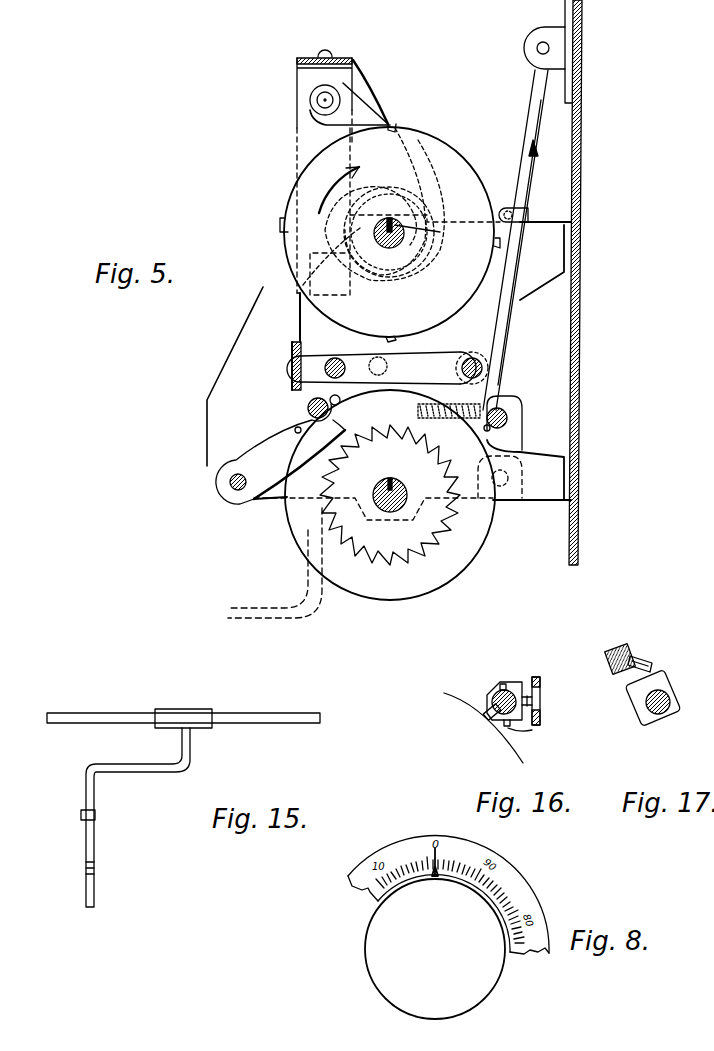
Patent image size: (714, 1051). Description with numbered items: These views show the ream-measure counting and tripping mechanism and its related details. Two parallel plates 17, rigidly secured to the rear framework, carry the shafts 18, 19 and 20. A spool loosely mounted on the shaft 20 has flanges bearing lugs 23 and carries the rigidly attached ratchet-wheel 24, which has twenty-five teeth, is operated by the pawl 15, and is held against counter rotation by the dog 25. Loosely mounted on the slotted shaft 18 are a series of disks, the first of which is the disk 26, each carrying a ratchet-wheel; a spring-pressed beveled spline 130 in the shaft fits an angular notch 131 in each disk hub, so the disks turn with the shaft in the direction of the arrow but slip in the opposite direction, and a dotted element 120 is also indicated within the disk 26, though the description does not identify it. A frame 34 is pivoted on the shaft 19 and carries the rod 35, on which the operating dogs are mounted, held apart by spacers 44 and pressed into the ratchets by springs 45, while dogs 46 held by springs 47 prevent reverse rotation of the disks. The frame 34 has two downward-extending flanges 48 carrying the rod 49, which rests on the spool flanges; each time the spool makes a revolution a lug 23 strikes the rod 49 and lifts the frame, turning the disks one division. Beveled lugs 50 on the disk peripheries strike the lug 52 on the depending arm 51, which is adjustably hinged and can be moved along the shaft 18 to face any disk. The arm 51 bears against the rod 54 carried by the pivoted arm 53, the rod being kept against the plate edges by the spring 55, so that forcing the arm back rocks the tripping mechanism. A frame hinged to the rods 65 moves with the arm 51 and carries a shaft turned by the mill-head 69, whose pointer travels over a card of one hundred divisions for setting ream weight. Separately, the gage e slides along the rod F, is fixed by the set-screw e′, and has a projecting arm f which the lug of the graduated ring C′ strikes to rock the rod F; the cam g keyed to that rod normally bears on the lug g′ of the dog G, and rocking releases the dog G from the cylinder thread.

In FIG. 5, the dog 15 is at (308, 590).
In FIG. 5, the parallel plates 17 is at (394, 282).
In FIG. 5, the shaft 18 is at (389, 248).
In FIG. 5, the shaft 19 is at (480, 362).
In FIG. 5, the shaft 20 is at (407, 490).
In FIG. 5, the lugs 23 is at (340, 400).
In FIG. 5, the ratchet-wheel 24 is at (374, 495).
In FIG. 5, the dog 25 is at (275, 455).
In FIG. 5, the disk 26 is at (392, 232).
In FIG. 5, the frame 34 is at (335, 358).
In FIG. 5, the rod 35 is at (290, 378).
In FIG. 5, the spacers 44 is at (420, 360).
In FIG. 5, the springs 45 is at (296, 300).
In FIG. 5, the dogs 46 is at (355, 107).
In FIG. 5, the springs 47 is at (372, 80).
In FIG. 5, the flanges 48 is at (308, 406).
In FIG. 5, the rod 49 is at (294, 430).
In FIG. 5, the beveled lugs 50 is at (396, 126).
In FIG. 5, the depending arm 51 is at (524, 190).
In FIG. 15, the depending arm 51 is at (110, 764).
In FIG. 5, the lug 52 is at (510, 208).
In FIG. 15, the lug 52 is at (95, 814).
In FIG. 5, the arm 53 is at (522, 420).
In FIG. 5, the rod 54 is at (500, 408).
In FIG. 5, the spring 55 is at (440, 418).
In FIG. 5, the rods 65 is at (549, 47).
In FIG. 15, the rods 65 is at (245, 713).
In FIG. 8, the mill-head 69 is at (435, 949).
In FIG. 5, the dotted circle 120 is at (420, 258).
In FIG. 5, the spline 130 is at (392, 478).
In FIG. 5, the angular notch 131 is at (390, 218).
In FIG. 16, the gage e is at (500, 684).
In FIG. 16, the set-screw e′ is at (490, 694).
In FIG. 16, the projecting arm f is at (538, 725).
In FIG. 16, the rod F is at (486, 718).
In FIG. 17, the rod F is at (672, 694).
In FIG. 16, the graduated ring C′ is at (494, 716).
In FIG. 17, the dog G is at (620, 646).
In FIG. 17, the cam g is at (636, 706).
In FIG. 17, the lug g′ is at (650, 660).